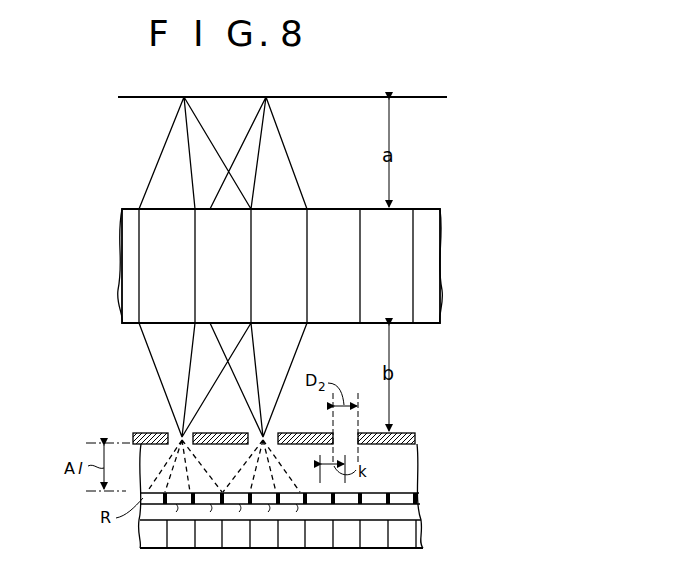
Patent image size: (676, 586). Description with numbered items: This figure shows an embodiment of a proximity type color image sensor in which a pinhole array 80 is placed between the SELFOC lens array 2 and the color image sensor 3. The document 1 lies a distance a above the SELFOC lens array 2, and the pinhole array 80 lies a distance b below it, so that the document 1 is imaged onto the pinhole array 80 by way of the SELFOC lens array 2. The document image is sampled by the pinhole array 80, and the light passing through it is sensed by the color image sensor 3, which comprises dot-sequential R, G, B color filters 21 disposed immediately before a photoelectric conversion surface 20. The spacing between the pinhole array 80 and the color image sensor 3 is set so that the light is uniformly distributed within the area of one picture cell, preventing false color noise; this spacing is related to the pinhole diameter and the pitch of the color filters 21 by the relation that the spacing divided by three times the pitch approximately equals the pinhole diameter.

The document 1 is at (447, 97).
The SELFOC lens array 2 is at (440, 212).
The pinhole array 80 is at (415, 438).
The R, G, B color filters 21 is at (423, 499).
The photoelectric conversion surface 20 is at (423, 537).
The color image sensor 3 is at (331, 496).